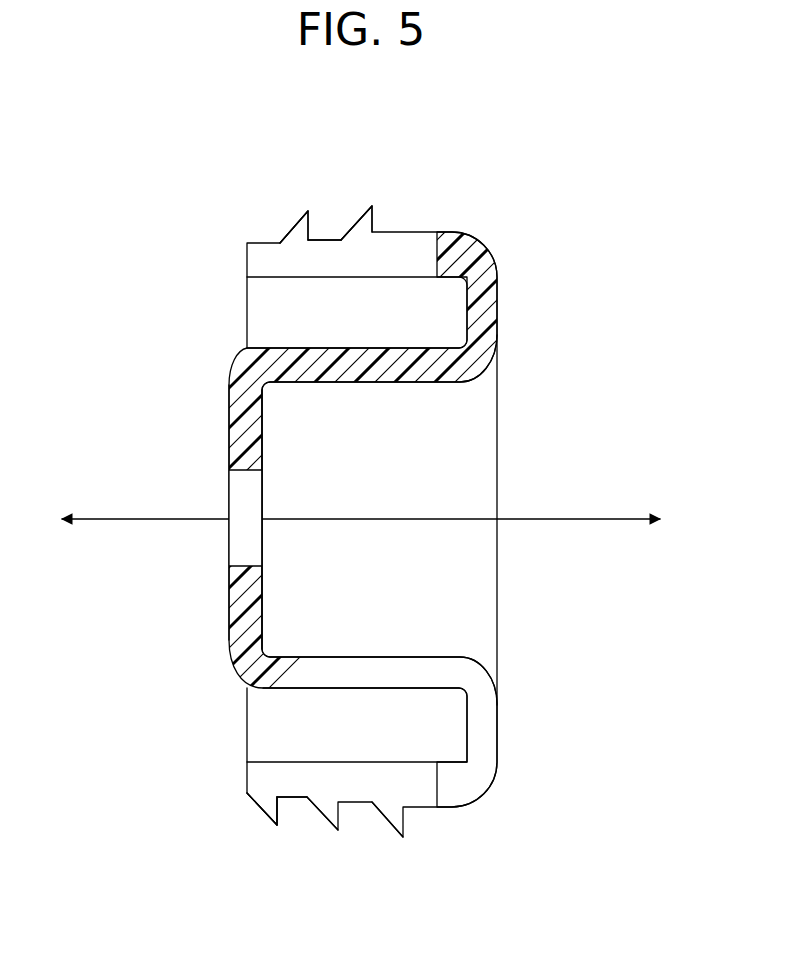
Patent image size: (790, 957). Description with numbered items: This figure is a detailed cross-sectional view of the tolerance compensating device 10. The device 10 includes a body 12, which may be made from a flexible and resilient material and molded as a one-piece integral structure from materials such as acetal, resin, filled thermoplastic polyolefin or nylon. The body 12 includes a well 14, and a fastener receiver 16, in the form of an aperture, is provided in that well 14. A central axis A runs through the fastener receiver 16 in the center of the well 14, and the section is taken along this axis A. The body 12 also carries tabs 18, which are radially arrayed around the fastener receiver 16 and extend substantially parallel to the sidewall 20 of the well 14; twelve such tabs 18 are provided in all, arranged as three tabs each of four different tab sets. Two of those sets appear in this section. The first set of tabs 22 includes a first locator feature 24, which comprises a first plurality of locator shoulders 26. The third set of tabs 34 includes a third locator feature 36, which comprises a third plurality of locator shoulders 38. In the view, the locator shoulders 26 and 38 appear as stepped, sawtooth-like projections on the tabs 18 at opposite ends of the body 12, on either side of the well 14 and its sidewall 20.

The tolerance compensating device 10 is at (556, 221).
The body 12 is at (480, 792).
The well 14 is at (395, 580).
The fastener receiver 16 is at (243, 537).
The tabs 18 is at (291, 201).
The sidewall 20 is at (385, 370).
The first set of tabs 22 is at (296, 782).
The first locator feature 24 is at (278, 845).
The first plurality of locator shoulders 26 is at (263, 803).
The third set of tabs 34 is at (324, 257).
The third locator feature 36 is at (374, 189).
The third plurality of locator shoulders 38 is at (297, 228).
The central axis A is at (130, 519).